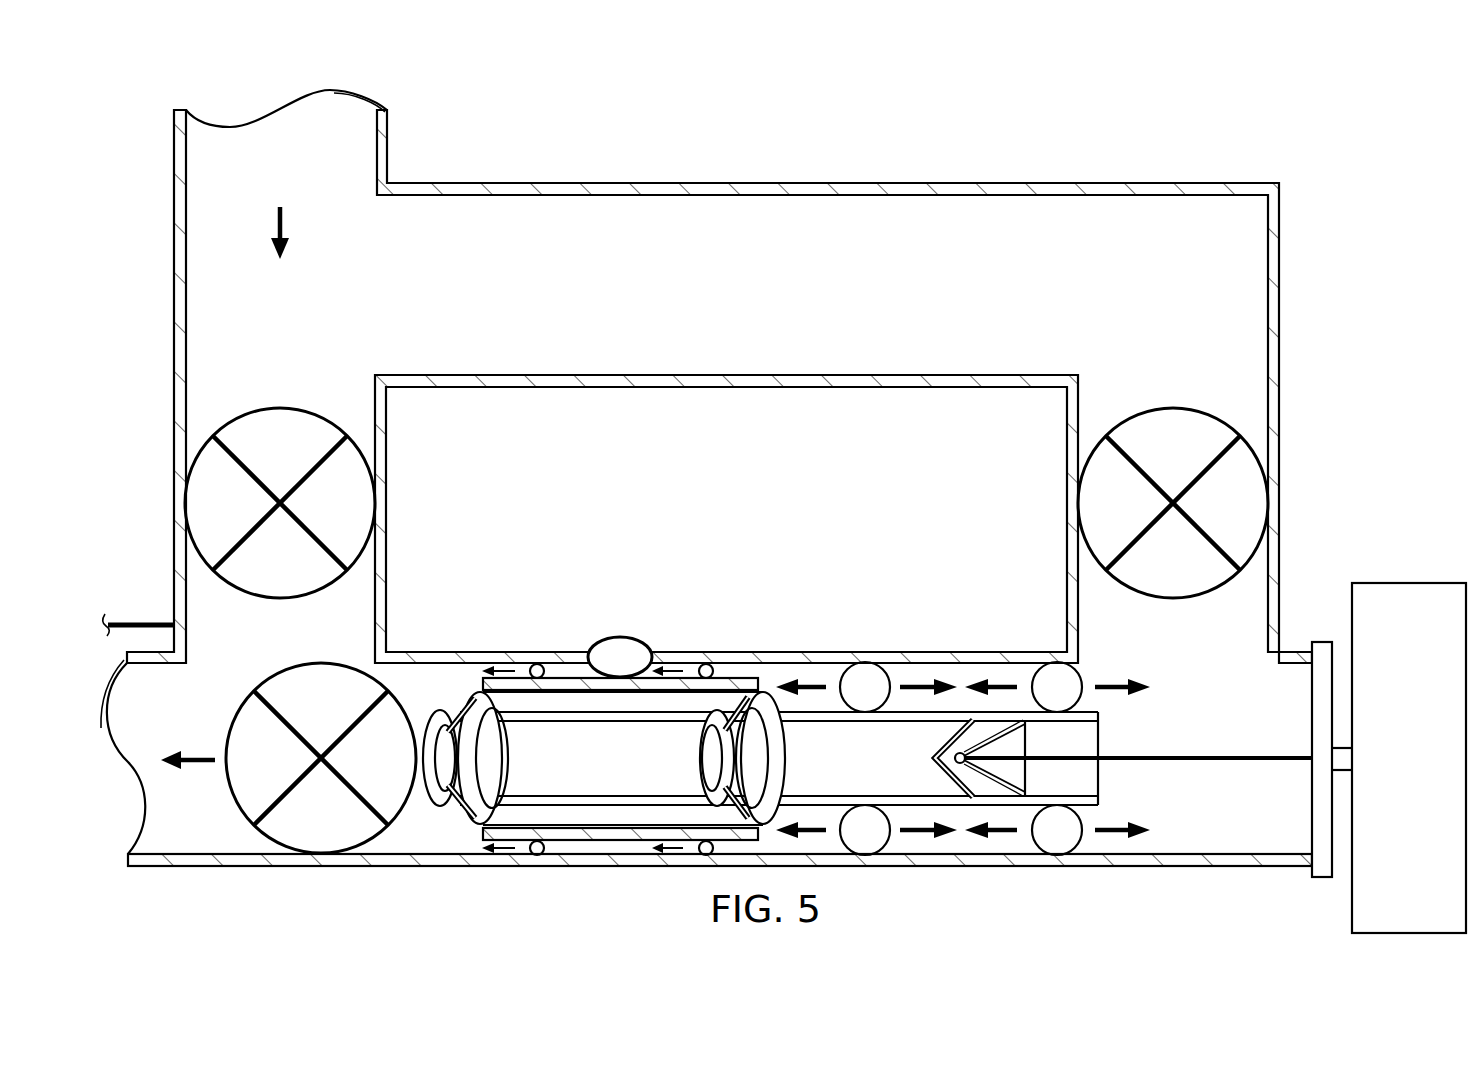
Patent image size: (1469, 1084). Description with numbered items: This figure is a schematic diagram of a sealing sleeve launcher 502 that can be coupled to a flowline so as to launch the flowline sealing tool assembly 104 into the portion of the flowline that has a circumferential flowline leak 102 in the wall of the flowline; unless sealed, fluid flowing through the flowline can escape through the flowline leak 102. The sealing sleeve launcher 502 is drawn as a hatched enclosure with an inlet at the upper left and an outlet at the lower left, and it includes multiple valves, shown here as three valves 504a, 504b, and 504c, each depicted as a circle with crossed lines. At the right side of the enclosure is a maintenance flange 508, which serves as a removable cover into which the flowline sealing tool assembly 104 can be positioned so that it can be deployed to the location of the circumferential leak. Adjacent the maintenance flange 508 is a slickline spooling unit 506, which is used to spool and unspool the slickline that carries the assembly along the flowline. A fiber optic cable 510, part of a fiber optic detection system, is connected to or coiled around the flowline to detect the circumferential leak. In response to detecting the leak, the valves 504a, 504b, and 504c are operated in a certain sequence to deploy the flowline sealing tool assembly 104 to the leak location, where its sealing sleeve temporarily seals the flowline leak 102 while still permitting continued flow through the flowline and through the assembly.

The sealing sleeve launcher 502 is at (1068, 115).
The valve 504a is at (278, 407).
The valve 504b is at (322, 661).
The valve 504c is at (1174, 407).
The fiber optic cable 510 is at (135, 622).
The flowline sealing tool assembly 104 is at (765, 619).
The flowline leak 102 is at (618, 637).
The maintenance flange 508 is at (1322, 642).
The slickline spooling unit 506 is at (1432, 780).